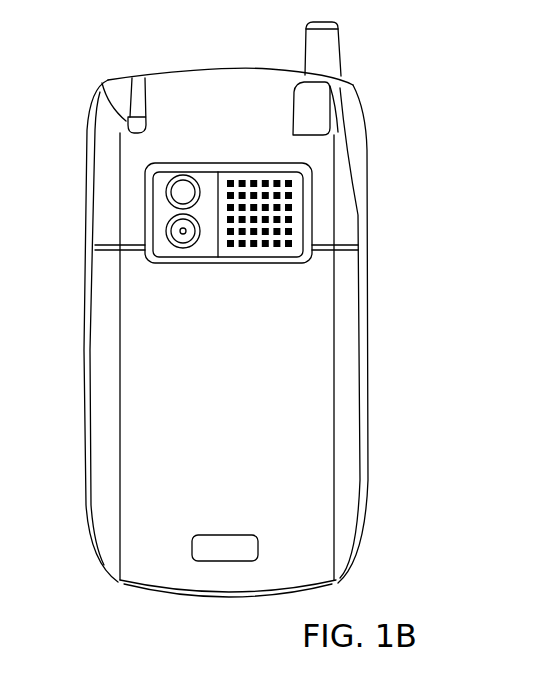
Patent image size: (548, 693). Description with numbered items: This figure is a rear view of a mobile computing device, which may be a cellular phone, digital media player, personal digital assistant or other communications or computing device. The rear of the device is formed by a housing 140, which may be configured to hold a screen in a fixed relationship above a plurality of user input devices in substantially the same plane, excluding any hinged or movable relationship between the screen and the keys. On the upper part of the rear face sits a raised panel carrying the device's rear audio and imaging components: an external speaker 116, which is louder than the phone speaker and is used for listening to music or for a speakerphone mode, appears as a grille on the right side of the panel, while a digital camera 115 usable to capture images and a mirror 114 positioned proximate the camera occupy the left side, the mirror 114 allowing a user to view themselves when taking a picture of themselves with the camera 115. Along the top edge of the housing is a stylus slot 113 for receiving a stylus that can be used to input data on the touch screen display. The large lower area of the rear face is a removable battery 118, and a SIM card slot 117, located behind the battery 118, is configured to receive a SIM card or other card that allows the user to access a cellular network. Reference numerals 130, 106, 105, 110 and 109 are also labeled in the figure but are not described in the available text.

The stylus slot 113 is at (117, 73).
The mirror 114 is at (159, 192).
The digital camera 115 is at (168, 248).
The external speaker 116 is at (304, 210).
The SIM card slot 117 is at (311, 493).
The removable battery 118 is at (222, 566).
The antenna 130 is at (16, 44).
The housing 140 is at (79, 572).
The component 106 is at (12, 362).
The component 105 is at (12, 414).
The component 110 is at (13, 497).
The component 109 is at (12, 550).